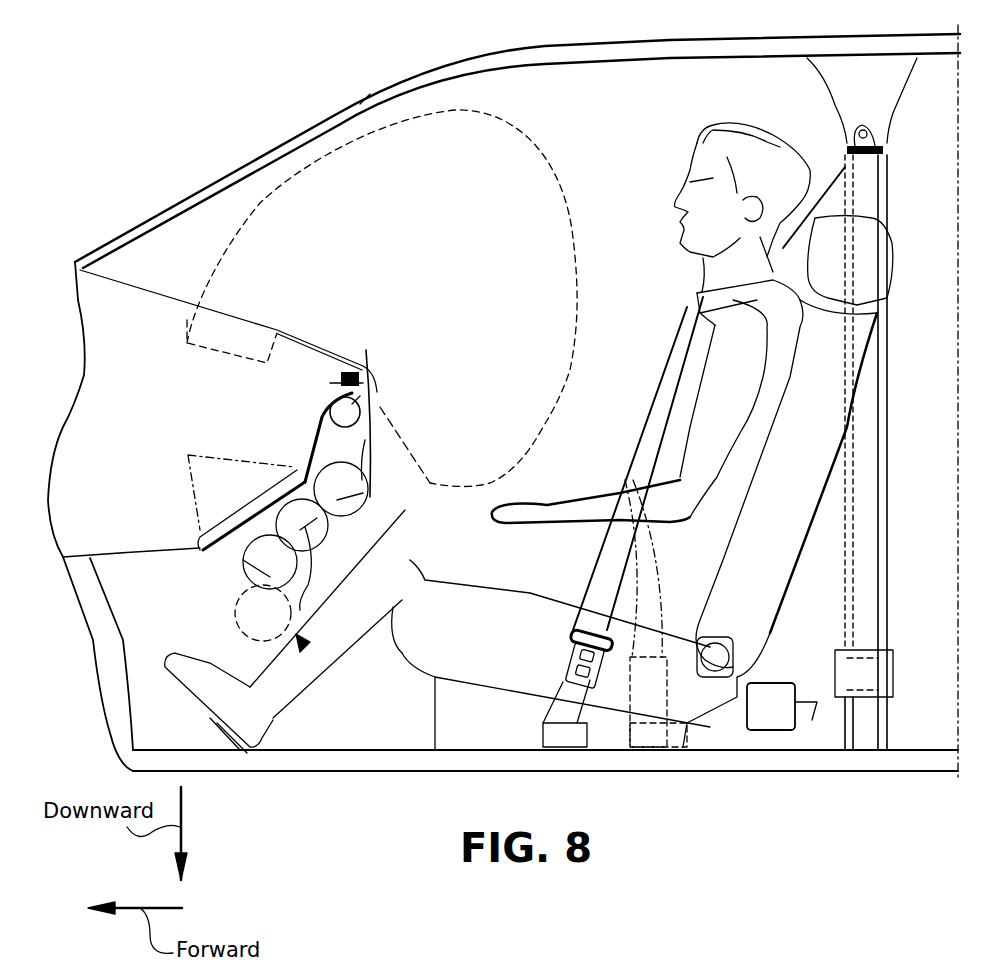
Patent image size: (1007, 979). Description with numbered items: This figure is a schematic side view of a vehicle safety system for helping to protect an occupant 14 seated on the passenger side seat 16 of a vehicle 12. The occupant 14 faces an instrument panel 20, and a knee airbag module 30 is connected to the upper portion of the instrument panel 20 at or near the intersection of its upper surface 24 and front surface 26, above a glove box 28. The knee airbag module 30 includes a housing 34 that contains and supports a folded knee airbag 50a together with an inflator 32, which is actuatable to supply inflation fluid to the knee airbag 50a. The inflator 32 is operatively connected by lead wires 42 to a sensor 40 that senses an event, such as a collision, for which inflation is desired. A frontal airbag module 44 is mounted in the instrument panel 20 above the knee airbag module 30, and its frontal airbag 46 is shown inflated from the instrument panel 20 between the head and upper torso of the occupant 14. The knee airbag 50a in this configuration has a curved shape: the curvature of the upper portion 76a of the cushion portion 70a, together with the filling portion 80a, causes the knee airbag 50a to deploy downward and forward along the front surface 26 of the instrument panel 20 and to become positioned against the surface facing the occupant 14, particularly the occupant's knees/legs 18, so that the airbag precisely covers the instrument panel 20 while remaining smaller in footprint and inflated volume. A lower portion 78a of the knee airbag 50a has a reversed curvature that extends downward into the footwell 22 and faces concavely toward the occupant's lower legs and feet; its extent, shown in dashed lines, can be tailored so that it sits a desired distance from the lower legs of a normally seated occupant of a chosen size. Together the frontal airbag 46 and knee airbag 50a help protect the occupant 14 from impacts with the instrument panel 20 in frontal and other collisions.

The vehicle 12 is at (205, 150).
The occupant 14 is at (690, 365).
The passenger side seat 16 is at (523, 653).
The knees/legs 18 is at (425, 582).
The instrument panel 20 is at (157, 328).
The footwell 22 is at (337, 662).
The upper surface 24 is at (147, 289).
The front surface 26 is at (377, 417).
The glove box 28 is at (697, 50).
The knee airbag module 30 is at (297, 320).
The inflator 32 is at (373, 403).
The housing 34 is at (318, 436).
The sensor 40 is at (767, 703).
The lead wires 42 is at (360, 372).
The frontal airbag module 44 is at (227, 337).
The frontal airbag 46 is at (535, 124).
The knee airbag 50a is at (320, 603).
The cushion portion 70a is at (318, 522).
The upper portion 76a is at (363, 493).
The lower portion 78a is at (243, 560).
The filling portion 80a is at (340, 440).